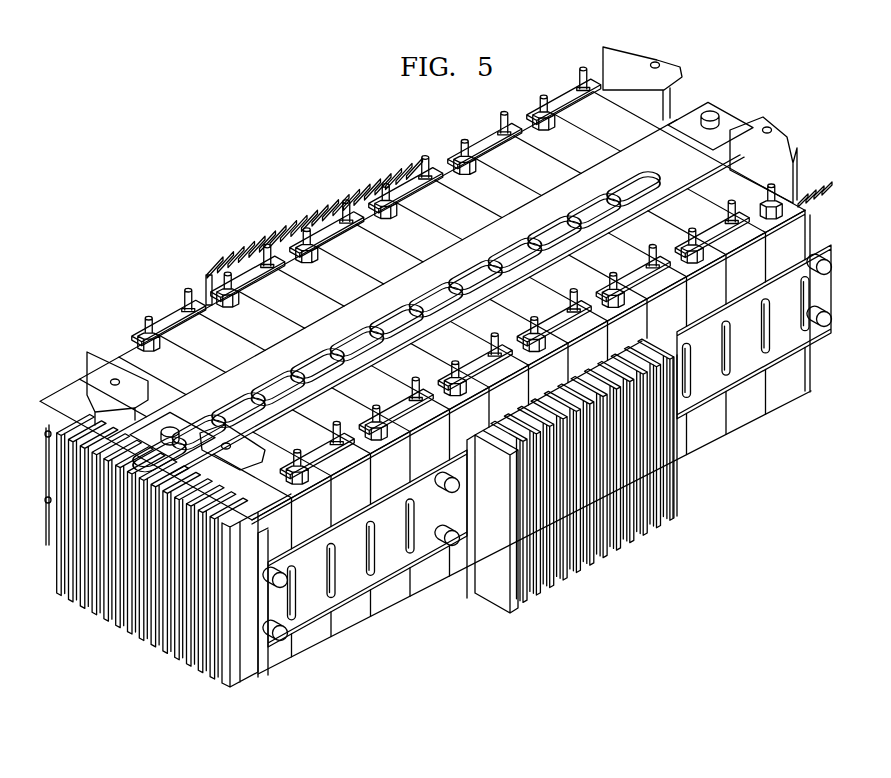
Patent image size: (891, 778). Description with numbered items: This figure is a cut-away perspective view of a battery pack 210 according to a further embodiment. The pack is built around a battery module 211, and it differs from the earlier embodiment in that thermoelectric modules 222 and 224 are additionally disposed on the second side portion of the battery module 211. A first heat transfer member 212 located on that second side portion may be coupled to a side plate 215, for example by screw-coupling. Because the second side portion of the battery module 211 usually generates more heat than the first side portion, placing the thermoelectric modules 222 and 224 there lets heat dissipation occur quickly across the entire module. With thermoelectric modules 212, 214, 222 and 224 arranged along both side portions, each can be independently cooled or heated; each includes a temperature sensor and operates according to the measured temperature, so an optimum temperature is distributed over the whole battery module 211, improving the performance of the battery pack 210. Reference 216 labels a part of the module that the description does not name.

The battery pack 210 is at (436, 396).
The battery module 211 is at (748, 435).
The first heat transfer member 212 is at (97, 402).
The thermoelectric module 214 is at (243, 657).
The side plate 215 is at (355, 580).
The top plate 216 is at (485, 245).
The thermoelectric module 222 is at (612, 340).
The thermoelectric module 224 is at (494, 574).